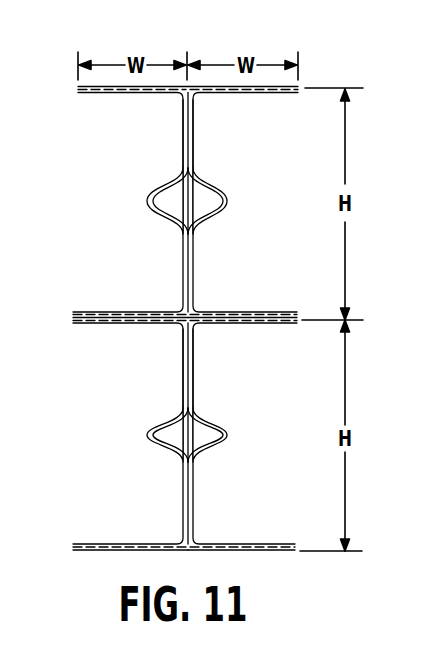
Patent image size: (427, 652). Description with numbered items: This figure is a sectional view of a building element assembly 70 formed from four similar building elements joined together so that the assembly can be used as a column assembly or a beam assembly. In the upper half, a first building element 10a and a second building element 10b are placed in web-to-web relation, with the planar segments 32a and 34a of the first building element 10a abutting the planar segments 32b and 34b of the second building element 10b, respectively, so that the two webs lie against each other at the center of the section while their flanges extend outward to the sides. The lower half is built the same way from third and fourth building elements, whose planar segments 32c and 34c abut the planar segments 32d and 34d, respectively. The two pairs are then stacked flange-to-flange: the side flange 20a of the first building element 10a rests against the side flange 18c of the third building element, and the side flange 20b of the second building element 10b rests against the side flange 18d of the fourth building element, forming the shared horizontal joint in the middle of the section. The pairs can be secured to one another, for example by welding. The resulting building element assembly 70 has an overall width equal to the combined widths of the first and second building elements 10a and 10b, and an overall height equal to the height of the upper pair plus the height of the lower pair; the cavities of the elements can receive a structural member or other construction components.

The building element assembly 70 is at (50, 90).
The first building element 10a is at (88, 104).
The second building element 10b is at (279, 104).
The side flange of the first building element 20a is at (93, 302).
The side flange of the second building element 20b is at (241, 302).
The side flange of the third building element 18c is at (112, 333).
The side flange of the fourth building element 18d is at (263, 333).
The planar segment of the first building element 32a is at (183, 136).
The planar segment of the second building element 32b is at (193, 147).
The planar segment of the third building element 32c is at (183, 379).
The planar segment of the fourth building element 32d is at (193, 377).
The planar segment of the first building element 34a is at (183, 248).
The planar segment of the second building element 34b is at (193, 240).
The planar segment of the third building element 34c is at (183, 472).
The planar segment of the fourth building element 34d is at (193, 489).